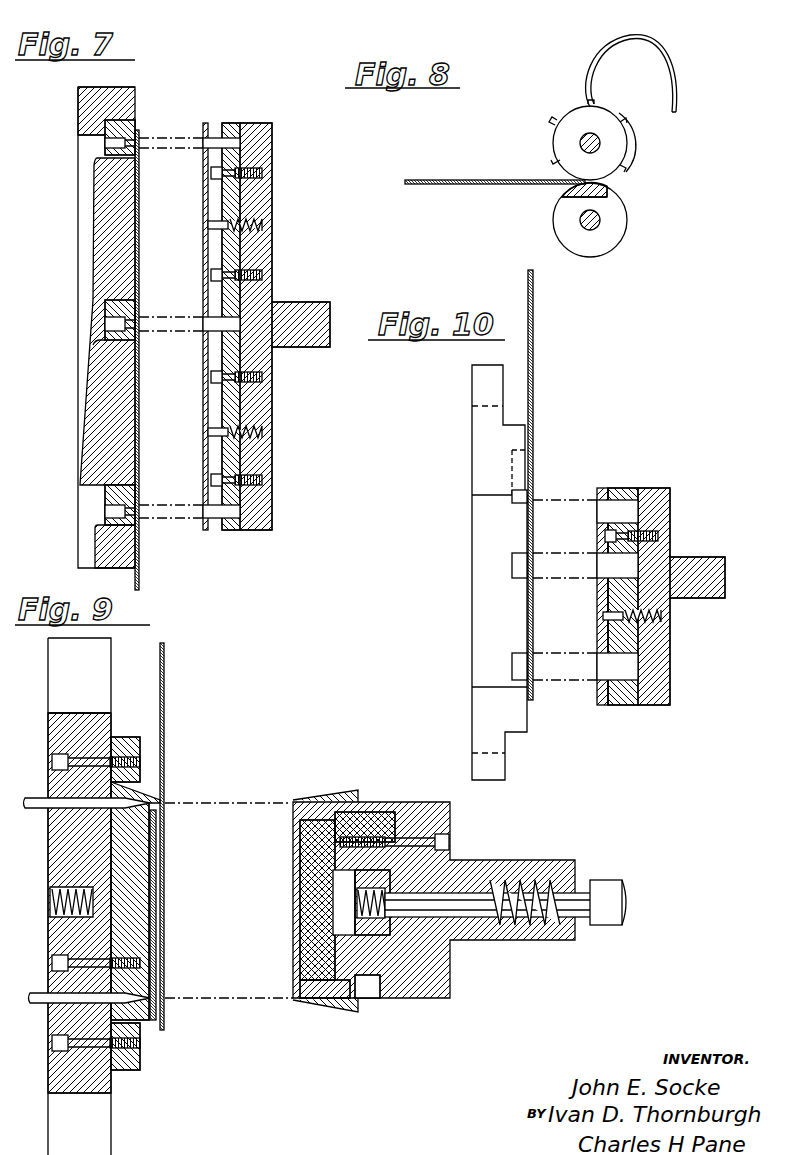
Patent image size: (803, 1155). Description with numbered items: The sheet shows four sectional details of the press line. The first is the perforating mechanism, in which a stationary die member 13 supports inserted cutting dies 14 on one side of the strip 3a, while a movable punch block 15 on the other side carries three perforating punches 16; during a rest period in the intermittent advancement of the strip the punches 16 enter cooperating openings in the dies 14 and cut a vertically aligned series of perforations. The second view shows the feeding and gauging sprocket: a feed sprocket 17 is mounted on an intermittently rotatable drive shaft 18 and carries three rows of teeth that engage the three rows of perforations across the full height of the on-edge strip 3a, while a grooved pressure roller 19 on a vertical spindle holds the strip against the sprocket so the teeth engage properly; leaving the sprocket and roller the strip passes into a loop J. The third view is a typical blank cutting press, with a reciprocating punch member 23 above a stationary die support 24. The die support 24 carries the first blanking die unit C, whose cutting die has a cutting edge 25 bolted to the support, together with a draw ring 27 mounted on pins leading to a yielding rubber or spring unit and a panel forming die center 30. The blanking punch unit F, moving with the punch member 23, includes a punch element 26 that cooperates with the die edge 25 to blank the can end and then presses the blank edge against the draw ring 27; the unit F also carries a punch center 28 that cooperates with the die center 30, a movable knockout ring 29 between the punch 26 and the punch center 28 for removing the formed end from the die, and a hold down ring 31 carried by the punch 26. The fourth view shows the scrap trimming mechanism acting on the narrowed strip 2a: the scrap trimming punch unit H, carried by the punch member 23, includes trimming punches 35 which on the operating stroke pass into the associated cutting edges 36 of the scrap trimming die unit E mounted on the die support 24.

In FIG. 7, the stationary die member 13 is at (90, 95).
In FIG. 7, the cutting dies 14 is at (118, 143).
In FIG. 7, the strip 3a is at (140, 210).
In FIG. 8, the strip 3a is at (436, 181).
In FIG. 7, the movable punch block 15 is at (258, 148).
In FIG. 7, the perforating punches 16 is at (214, 140).
In FIG. 8, the feed sprocket 17 is at (560, 135).
In FIG. 8, the drive shaft 18 is at (580, 145).
In FIG. 8, the pressure roller 19 is at (612, 215).
In FIG. 8, the loop J is at (597, 46).
In FIG. 10, the narrowed strip 2a is at (555, 485).
In FIG. 9, the narrowed strip 2a is at (165, 718).
In FIG. 10, the scrap trimming die unit E is at (478, 492).
In FIG. 10, the cutting edges 36 is at (515, 503).
In FIG. 10, the trimming punches 35 is at (617, 590).
In FIG. 10, the scrap trimming punch unit H is at (660, 500).
In FIG. 9, the stationary die support 24 is at (95, 1083).
In FIG. 9, the first blanking die unit C is at (66, 930).
In FIG. 9, the panel forming die center 30 is at (140, 905).
In FIG. 9, the draw ring 27 is at (160, 998).
In FIG. 9, the cutting edge 25 is at (145, 1022).
In FIG. 9, the blanking punch unit F is at (440, 952).
In FIG. 9, the punch center 28 is at (308, 923).
In FIG. 9, the punch element 26 is at (380, 810).
In FIG. 9, the reciprocating punch member 23 is at (440, 820).
In FIG. 9, the knockout ring 29 is at (333, 1002).
In FIG. 9, the hold down ring 31 is at (350, 1008).